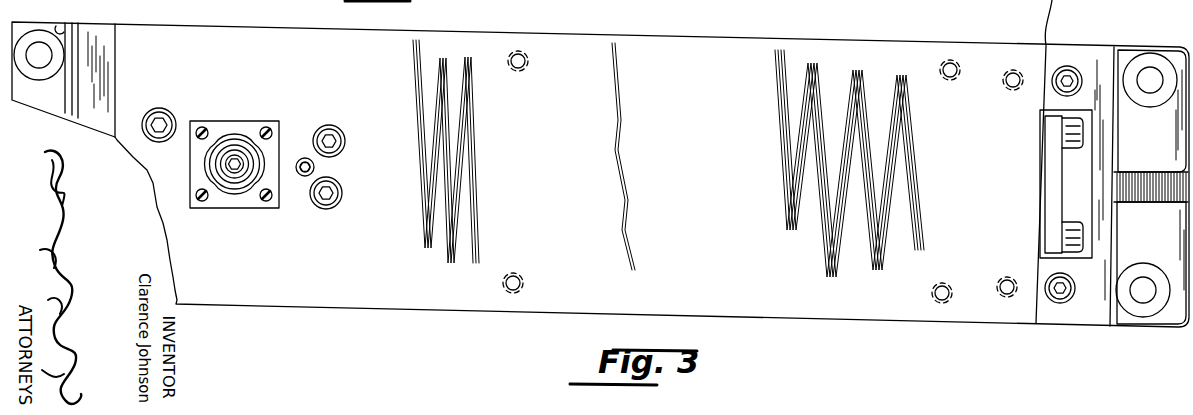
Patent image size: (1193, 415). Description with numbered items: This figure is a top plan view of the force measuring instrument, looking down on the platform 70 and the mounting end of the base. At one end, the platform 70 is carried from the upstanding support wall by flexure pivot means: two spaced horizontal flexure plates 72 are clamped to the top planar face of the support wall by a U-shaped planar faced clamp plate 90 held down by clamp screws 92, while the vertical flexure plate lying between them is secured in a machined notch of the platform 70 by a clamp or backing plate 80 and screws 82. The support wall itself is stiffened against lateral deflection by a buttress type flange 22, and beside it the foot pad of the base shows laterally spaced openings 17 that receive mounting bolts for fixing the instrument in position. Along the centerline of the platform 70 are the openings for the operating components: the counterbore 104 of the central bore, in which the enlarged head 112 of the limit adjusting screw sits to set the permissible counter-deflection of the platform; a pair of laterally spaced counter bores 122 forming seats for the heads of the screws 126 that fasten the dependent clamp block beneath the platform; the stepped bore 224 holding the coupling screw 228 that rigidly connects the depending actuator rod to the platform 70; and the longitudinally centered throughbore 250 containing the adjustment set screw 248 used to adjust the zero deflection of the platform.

The openings 17 is at (1138, 100).
The buttress type flange 22 is at (1152, 180).
The platform 70 is at (491, 290).
The flexure plates 72 is at (1035, 315).
The clamp or backing plate 80 is at (1050, 192).
The screws 82 is at (1040, 136).
The U-shaped planar faced clamp plate 90 is at (1098, 64).
The clamp screws 92 is at (1067, 66).
The counterbore 104 is at (232, 142).
The enlarged head 112 is at (237, 172).
The counter bores 122 is at (346, 141).
The screws 126 is at (332, 128).
The stepped bore 224 is at (159, 108).
The coupling screw 228 is at (172, 118).
The adjustment set screw 248 is at (316, 167).
The throughbore 250 is at (298, 158).